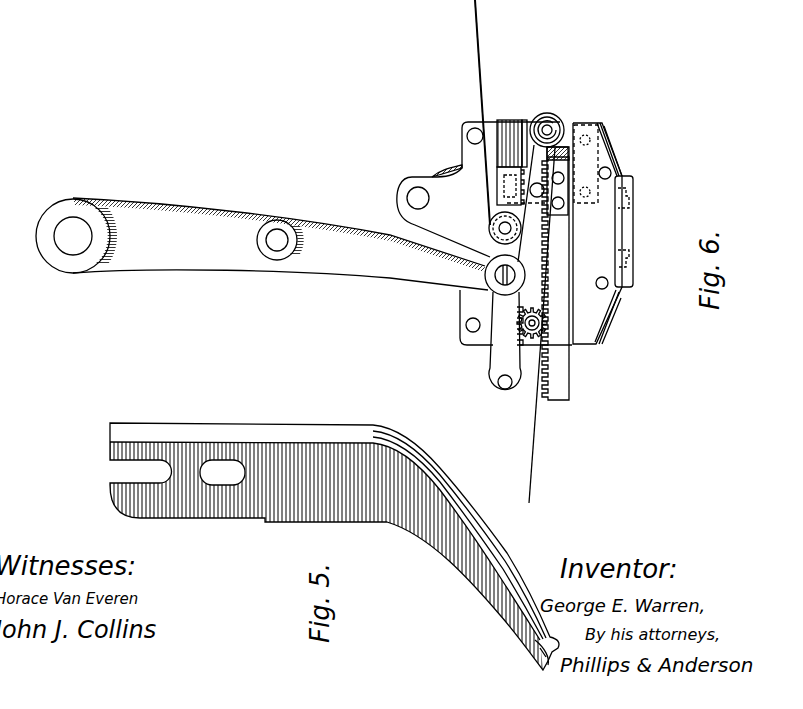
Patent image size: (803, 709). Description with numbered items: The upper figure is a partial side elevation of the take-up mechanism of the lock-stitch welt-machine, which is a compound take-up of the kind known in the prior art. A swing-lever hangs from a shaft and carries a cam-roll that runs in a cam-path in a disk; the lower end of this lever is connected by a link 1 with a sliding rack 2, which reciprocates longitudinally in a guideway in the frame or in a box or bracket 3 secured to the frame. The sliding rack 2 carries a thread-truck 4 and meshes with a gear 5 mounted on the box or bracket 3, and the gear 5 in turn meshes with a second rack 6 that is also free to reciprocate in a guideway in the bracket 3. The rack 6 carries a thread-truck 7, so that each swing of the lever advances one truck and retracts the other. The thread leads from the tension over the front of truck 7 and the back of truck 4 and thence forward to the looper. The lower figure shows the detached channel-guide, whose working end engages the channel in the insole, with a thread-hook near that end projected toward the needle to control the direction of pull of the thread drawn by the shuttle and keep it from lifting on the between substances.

In FIG. 6, the link 1 is at (493, 352).
In FIG. 6, the sliding rack 2 is at (334, 230).
In FIG. 6, the box or bracket 3 is at (617, 155).
In FIG. 6, the thread-truck 4 is at (492, 225).
In FIG. 5, the thread-truck 4 is at (527, 667).
In FIG. 6, the gear 5 is at (532, 340).
In FIG. 6, the rack 6 is at (562, 390).
In FIG. 5, the rack 6 is at (248, 520).
In FIG. 6, the thread-truck 7 is at (558, 115).